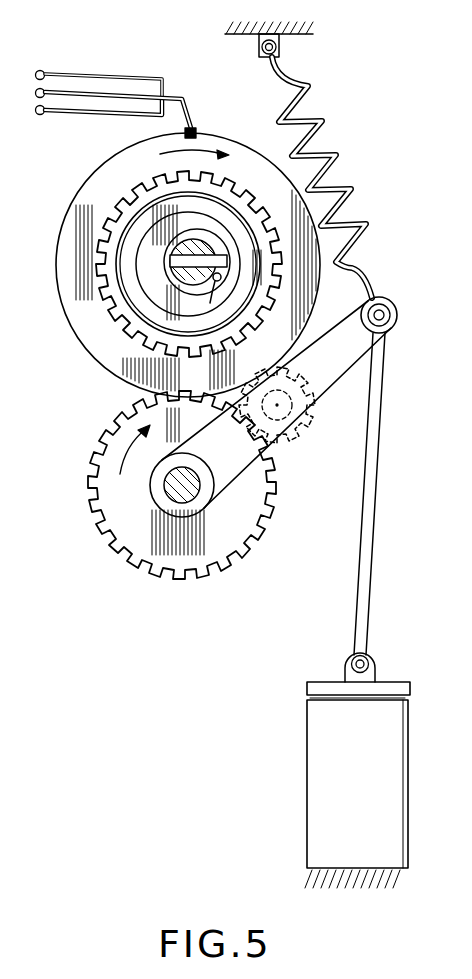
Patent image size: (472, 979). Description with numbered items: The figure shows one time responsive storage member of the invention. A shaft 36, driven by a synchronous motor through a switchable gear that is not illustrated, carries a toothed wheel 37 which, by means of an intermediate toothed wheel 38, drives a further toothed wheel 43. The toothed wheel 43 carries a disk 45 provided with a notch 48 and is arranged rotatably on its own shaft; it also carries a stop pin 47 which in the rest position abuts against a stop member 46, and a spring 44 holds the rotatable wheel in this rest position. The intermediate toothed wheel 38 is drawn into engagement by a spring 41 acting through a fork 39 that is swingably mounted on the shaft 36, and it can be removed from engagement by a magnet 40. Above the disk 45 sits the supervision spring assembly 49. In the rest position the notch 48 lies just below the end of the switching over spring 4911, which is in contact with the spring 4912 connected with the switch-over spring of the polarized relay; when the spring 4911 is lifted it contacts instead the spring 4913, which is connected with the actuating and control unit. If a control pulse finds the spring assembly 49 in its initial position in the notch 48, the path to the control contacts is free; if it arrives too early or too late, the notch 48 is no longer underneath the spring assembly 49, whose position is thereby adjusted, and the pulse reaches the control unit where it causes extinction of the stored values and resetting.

The shaft 36 is at (176, 490).
The toothed wheel 37 is at (123, 527).
The toothed wheel 38 is at (306, 437).
The fork 39 is at (217, 488).
The magnet 40 is at (313, 757).
The spring 41 is at (323, 122).
The toothed wheel 43 is at (107, 310).
The spring 44 is at (206, 236).
The disk 45 is at (69, 207).
The stop member 46 is at (222, 253).
The stop pin 47 is at (218, 298).
The notch 48 is at (186, 127).
The supervision spring assembly 49 is at (46, 71).
The switching over spring 4911 is at (186, 113).
The spring 4912 is at (108, 117).
The spring 4913 is at (89, 74).